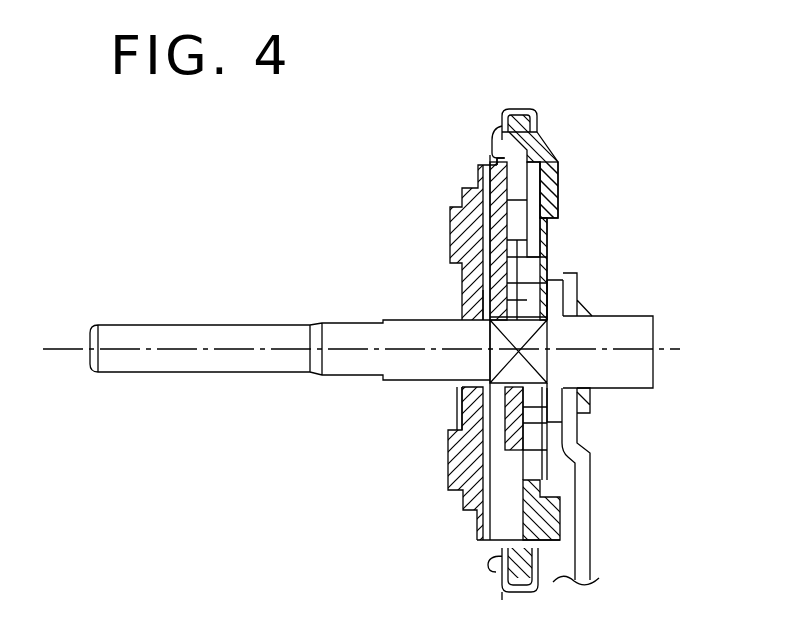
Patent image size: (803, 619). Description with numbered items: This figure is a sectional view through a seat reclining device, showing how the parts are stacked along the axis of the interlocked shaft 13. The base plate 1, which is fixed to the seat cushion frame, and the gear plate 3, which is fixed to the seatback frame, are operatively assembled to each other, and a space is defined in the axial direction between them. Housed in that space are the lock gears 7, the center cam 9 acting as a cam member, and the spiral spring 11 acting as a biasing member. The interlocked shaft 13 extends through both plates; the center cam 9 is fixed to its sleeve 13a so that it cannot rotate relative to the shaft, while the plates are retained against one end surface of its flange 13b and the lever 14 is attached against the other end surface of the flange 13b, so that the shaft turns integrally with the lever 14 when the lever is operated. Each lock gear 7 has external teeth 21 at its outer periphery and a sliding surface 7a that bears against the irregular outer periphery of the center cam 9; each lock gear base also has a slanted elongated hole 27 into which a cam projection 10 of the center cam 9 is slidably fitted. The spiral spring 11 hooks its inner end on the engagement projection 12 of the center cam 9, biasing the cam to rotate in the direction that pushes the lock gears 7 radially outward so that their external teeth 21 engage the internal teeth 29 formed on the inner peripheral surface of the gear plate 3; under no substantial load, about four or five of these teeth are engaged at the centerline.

The base plate 1 is at (547, 140).
The gear plate 3 is at (455, 460).
The lock gear 7 is at (507, 193).
The sliding surface 7a is at (556, 183).
The center cam 9 is at (523, 405).
The cam projection 10 is at (463, 285).
The spiral spring 11 is at (555, 228).
The engagement projection 12 is at (555, 272).
The interlocked shaft 13 is at (332, 322).
The sleeve 13a is at (548, 346).
The flange 13b is at (553, 298).
The lever 14 is at (592, 497).
The external teeth 21 is at (541, 113).
The elongated hole 27 is at (495, 256).
The internal teeth 29 is at (492, 160).